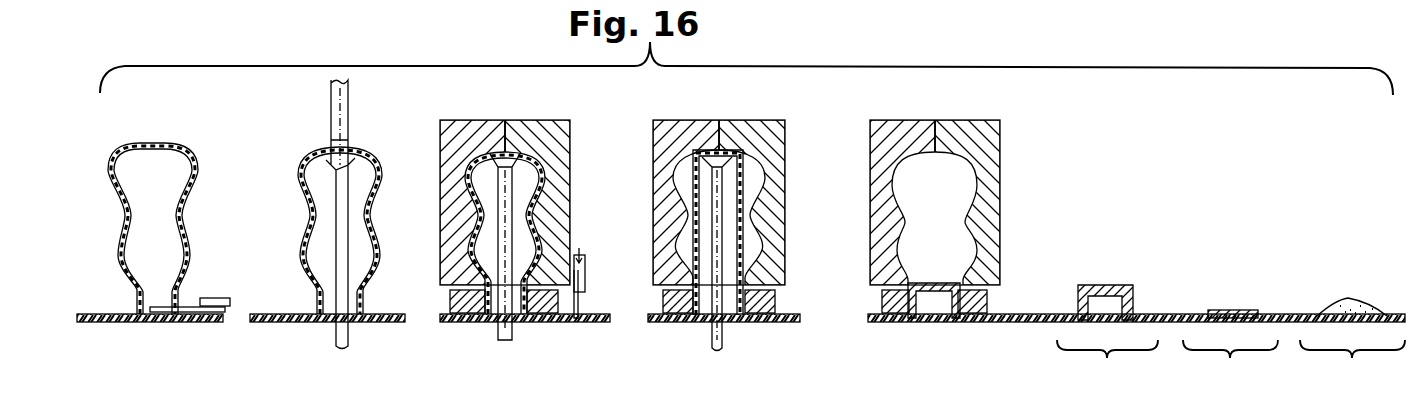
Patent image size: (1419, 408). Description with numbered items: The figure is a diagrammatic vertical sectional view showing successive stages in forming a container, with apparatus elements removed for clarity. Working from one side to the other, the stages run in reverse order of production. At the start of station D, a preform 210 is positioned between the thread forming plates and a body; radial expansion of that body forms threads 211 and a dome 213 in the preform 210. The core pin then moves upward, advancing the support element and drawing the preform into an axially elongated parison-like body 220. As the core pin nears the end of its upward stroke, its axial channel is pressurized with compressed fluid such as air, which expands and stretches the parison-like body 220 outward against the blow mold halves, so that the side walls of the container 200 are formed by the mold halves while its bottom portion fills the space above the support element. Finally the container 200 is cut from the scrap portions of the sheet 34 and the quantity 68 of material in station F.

The sheet 34 is at (252, 340).
The quantity 68 is at (1350, 298).
The container 200 is at (190, 153).
The preform 210 is at (975, 315).
The threads 211 is at (894, 302).
The dome 213 is at (934, 218).
The parison-like body 220 is at (745, 178).